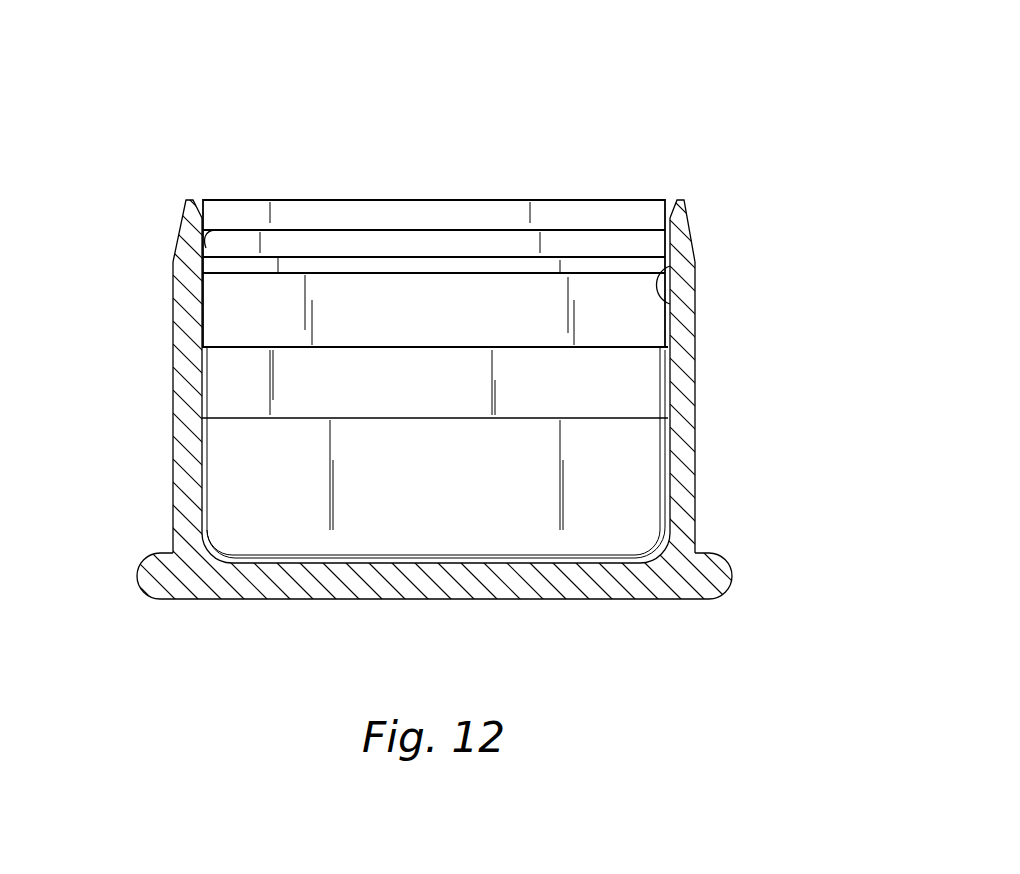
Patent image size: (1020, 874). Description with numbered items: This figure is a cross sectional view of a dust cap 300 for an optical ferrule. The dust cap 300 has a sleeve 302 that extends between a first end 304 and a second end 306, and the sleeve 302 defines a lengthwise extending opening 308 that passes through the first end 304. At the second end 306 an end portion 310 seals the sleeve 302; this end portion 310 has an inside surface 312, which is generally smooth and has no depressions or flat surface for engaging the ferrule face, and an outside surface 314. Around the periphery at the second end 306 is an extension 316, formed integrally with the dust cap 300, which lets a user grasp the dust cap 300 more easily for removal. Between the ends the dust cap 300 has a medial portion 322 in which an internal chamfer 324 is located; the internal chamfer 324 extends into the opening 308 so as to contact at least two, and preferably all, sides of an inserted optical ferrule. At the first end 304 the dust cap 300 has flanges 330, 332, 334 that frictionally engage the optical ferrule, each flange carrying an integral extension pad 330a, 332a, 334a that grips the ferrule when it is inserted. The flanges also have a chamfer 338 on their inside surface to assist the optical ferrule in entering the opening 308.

The dust cap 300 is at (826, 122).
The sleeve 302 is at (698, 374).
The first end 304 is at (724, 210).
The second end 306 is at (764, 568).
The opening 308 is at (561, 266).
The end portion 310 is at (558, 598).
The inside surface 312 is at (399, 561).
The outside surface 314 is at (299, 602).
The extension 316 is at (137, 583).
The medial portion 322 is at (135, 335).
The internal chamfer 324 is at (436, 399).
The flange 330 is at (683, 248).
The extension pad 330a is at (669, 292).
The flange 332 is at (417, 216).
The extension pad 332a is at (304, 250).
The flange 334 is at (181, 208).
The extension pad 334a is at (207, 233).
The chamfer 338 is at (512, 217).